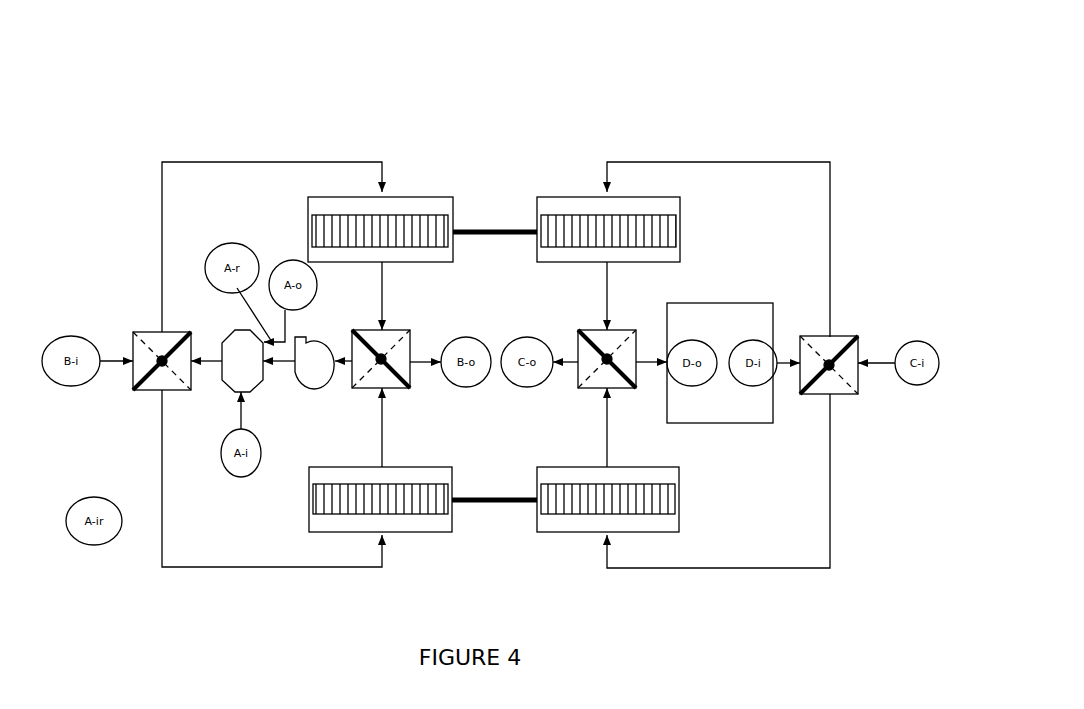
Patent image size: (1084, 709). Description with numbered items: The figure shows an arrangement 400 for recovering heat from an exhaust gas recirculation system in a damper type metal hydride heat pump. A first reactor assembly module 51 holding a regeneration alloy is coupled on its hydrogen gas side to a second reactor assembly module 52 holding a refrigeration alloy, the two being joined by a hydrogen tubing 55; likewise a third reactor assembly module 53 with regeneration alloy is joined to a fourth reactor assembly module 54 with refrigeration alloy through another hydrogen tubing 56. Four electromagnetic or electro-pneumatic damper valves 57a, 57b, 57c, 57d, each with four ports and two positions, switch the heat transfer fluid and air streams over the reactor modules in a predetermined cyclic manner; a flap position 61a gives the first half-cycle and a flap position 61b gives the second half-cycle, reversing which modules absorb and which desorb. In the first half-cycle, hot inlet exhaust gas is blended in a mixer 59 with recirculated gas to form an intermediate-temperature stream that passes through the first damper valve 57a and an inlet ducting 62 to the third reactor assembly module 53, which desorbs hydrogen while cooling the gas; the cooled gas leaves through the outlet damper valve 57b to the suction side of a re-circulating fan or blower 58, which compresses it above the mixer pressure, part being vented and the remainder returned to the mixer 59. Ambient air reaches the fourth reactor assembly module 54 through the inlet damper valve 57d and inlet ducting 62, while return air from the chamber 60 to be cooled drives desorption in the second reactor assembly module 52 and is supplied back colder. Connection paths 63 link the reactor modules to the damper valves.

The arrangement 400 is at (792, 87).
The first reactor assembly module 51 is at (362, 228).
The second reactor assembly module 52 is at (567, 222).
The third reactor assembly module 53 is at (405, 512).
The fourth reactor assembly module 54 is at (553, 515).
The hydrogen tubing 55 is at (495, 228).
The hydrogen tubing 56 is at (491, 517).
The first damper valve 57a is at (150, 392).
The outlet damper valve 57b is at (370, 390).
The damper valve 57c is at (622, 393).
The inlet damper valve 57d is at (840, 398).
The re-circulating fan or blower 58 is at (317, 382).
The mixer 59 is at (230, 380).
The chamber 60 is at (737, 308).
The flap position 61a is at (160, 358).
The flap position 61b is at (133, 335).
The inlet ducting 62 is at (218, 162).
The connection path 63 is at (607, 300).